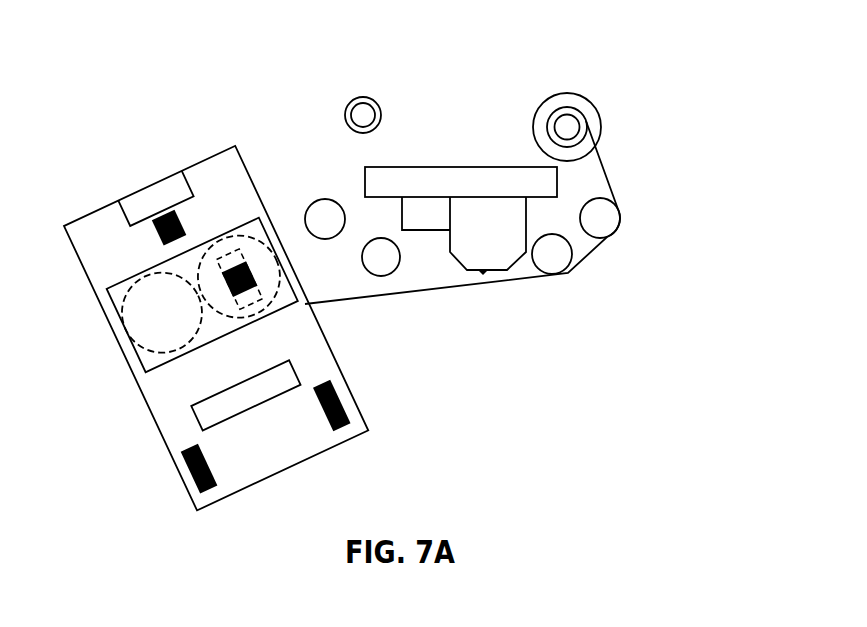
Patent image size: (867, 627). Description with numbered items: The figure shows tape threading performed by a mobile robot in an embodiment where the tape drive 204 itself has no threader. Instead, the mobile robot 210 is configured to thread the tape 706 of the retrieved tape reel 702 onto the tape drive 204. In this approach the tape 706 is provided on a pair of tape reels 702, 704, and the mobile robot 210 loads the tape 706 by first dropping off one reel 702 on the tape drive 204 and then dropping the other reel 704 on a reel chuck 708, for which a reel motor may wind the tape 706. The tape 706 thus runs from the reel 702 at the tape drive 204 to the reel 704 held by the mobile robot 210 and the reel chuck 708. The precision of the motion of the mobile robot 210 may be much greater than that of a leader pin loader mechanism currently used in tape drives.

The tape drive 204 is at (470, 82).
The mobile robot 210 is at (107, 204).
The tape reel 702 is at (578, 93).
The tape reel 704 is at (222, 334).
The tape 706 is at (415, 292).
The reel chuck 708 is at (346, 114).